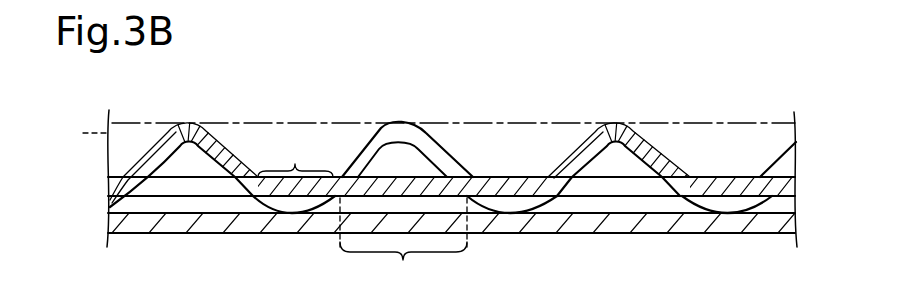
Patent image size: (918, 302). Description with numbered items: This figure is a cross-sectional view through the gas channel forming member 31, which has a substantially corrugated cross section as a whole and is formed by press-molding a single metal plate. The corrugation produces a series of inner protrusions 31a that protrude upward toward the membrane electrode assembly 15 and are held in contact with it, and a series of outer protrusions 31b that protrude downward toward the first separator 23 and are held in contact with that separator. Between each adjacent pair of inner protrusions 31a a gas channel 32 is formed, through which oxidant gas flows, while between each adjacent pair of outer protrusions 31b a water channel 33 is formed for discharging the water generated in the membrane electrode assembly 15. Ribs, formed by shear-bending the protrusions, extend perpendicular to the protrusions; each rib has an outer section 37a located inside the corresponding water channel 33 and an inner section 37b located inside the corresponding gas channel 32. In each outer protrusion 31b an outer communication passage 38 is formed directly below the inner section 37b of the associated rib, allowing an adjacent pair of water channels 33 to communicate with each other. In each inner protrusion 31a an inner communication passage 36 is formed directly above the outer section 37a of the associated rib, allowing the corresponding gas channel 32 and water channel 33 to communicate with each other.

The membrane electrode assembly 15 is at (83, 133).
The first separator 23 is at (127, 235).
The gas channel forming member 31 is at (453, 184).
The inner protrusion 31a is at (190, 121).
The outer protrusion 31b is at (297, 217).
The gas channel 32 is at (237, 143).
The water channel 33 is at (253, 198).
The inner communication passage 36 is at (450, 168).
The outer section of rib 37a is at (403, 247).
The inner section of rib 37b is at (295, 153).
The outer communication passage 38 is at (512, 247).